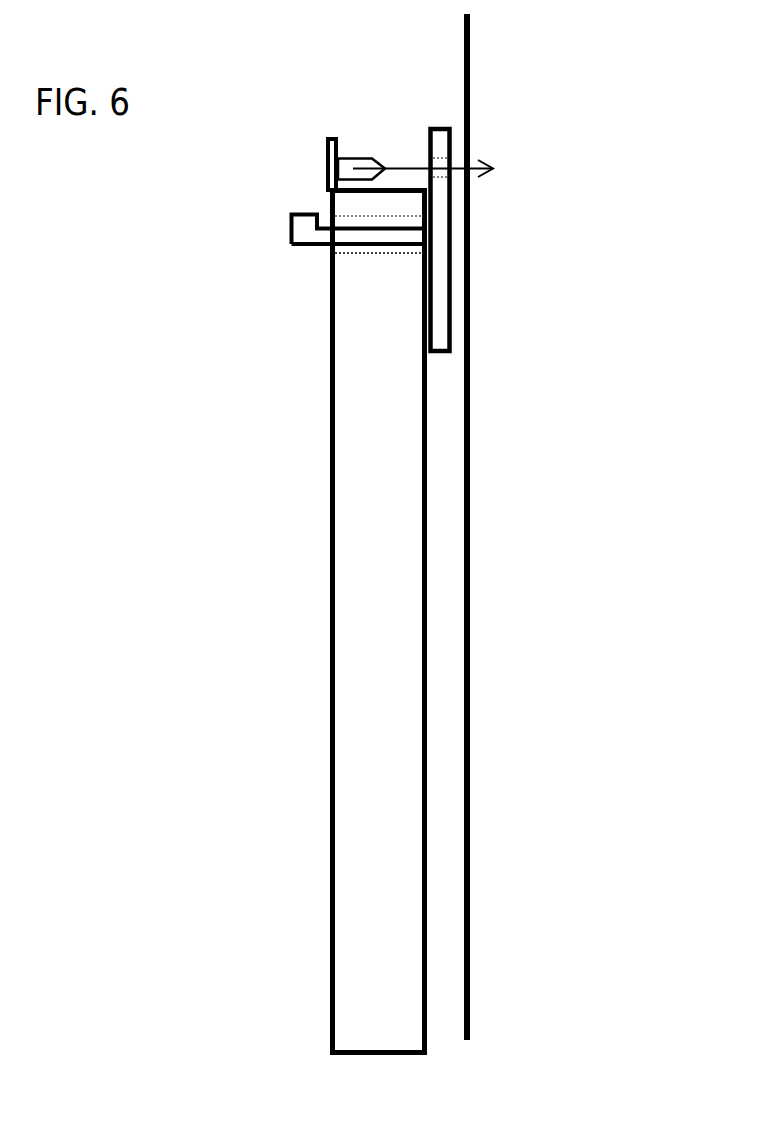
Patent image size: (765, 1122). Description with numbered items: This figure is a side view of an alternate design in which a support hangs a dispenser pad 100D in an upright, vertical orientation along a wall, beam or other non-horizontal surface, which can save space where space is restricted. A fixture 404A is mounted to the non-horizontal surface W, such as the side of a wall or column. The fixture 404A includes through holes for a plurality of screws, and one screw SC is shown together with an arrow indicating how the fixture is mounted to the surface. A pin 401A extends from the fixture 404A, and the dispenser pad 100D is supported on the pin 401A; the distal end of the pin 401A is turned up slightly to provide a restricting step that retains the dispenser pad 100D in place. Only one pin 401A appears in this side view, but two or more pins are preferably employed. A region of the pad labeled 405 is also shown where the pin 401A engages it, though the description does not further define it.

The dispenser pad 100D is at (358, 503).
The non-horizontal surface W is at (473, 493).
The fixture 404A is at (437, 278).
The screw SC is at (327, 160).
The pin 401A is at (305, 229).
The slot 405 is at (387, 253).